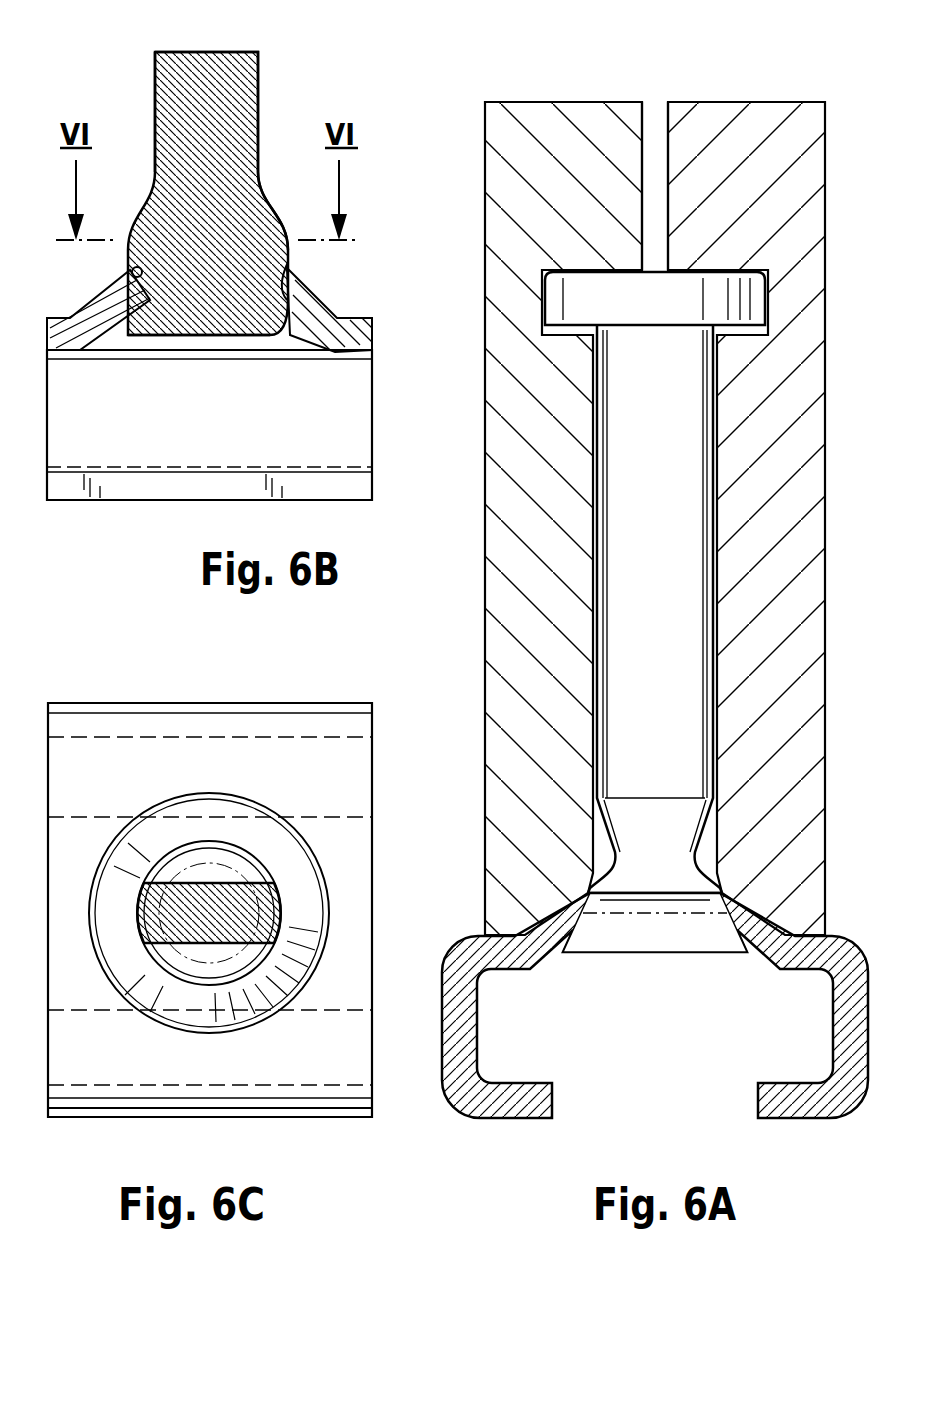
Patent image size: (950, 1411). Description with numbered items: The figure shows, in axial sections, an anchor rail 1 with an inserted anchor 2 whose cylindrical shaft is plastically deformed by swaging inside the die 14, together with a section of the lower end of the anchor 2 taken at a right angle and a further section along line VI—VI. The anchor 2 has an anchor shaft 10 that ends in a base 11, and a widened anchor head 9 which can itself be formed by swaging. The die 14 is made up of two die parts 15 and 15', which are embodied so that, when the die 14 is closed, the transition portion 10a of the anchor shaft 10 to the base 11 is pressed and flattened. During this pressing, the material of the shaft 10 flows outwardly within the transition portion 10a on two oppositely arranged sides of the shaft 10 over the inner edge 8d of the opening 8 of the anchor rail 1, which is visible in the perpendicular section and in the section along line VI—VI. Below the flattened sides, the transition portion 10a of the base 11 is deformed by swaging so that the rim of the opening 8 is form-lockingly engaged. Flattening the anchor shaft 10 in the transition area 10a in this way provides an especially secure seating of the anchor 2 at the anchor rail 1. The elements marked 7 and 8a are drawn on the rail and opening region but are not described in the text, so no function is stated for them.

In FIG. 6B, the anchor rail 1 is at (355, 308).
In FIG. 6B, the anchor 2 is at (136, 82).
In FIG. 6B, the sheet metal strip 7 is at (294, 300).
In FIG. 6C, the sheet metal strip 7 is at (308, 898).
In FIG. 6B, the opening 8 is at (246, 296).
In FIG. 6B, the hole edge 8a is at (130, 268).
In FIG. 6B, the inner edge 8d is at (156, 300).
In FIG. 6C, the inner edge 8d is at (252, 864).
In FIG. 6A, the anchor head 9 is at (664, 312).
In FIG. 6B, the anchor shaft 10 is at (237, 68).
In FIG. 6A, the anchor shaft 10 is at (668, 523).
In FIG. 6B, the transition portion 10a is at (270, 232).
In FIG. 6C, the transition portion 10a is at (274, 922).
In FIG. 6B, the base 11 is at (203, 330).
In FIG. 6A, the base 11 is at (650, 925).
In FIG. 6A, the die 14 is at (655, 76).
In FIG. 6A, the die part 15 is at (563, 480).
In FIG. 6A, the die part 15' is at (746, 480).